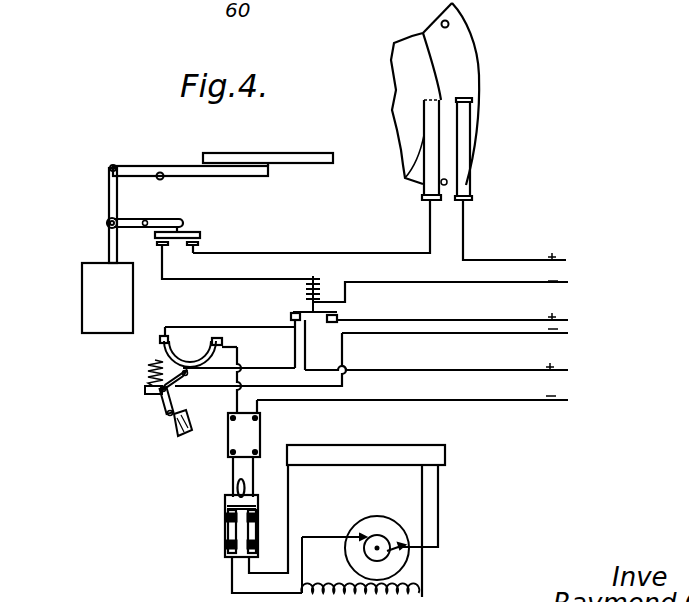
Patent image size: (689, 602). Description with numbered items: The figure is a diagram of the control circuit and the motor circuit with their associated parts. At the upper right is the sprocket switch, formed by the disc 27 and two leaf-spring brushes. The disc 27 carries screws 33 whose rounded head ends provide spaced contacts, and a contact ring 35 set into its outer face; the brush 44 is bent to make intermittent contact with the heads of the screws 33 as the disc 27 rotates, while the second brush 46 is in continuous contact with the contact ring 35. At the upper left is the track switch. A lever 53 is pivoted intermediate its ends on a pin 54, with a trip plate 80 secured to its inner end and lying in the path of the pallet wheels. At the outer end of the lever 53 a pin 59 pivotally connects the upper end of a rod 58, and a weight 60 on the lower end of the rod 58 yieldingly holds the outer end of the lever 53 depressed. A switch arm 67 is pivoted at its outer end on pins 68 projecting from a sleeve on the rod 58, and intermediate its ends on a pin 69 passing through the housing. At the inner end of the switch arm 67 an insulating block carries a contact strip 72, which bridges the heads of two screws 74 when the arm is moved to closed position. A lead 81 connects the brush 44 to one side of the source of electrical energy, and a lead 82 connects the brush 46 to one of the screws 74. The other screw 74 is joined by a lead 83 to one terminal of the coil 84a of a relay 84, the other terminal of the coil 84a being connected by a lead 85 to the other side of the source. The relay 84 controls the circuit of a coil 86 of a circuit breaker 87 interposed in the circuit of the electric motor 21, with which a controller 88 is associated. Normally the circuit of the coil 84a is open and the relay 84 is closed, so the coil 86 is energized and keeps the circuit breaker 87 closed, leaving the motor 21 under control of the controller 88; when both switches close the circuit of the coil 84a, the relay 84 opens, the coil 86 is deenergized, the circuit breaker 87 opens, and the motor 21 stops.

The electric motor 21 is at (384, 522).
The disc 27 is at (463, 60).
The screws 33 is at (449, 25).
The contact ring 35 is at (436, 80).
The brush 44 is at (470, 133).
The second brush 46 is at (431, 116).
The lever 53 is at (185, 166).
The pin 54 is at (166, 178).
The rod 58 is at (105, 192).
The pin 59 is at (108, 169).
The weight 60 is at (90, 302).
The switch arm 67 is at (152, 222).
The pins 68 is at (104, 224).
The pin 69 is at (118, 228).
The contact strip 72 is at (200, 234).
The screws 74 is at (170, 250).
The trip plate 80 is at (297, 153).
The lead 81 is at (463, 222).
The lead 82 is at (252, 253).
The lead 83 is at (240, 279).
The relay 84 is at (306, 294).
The coil 84a is at (320, 278).
The lead 85 is at (444, 285).
The coil 86 is at (148, 366).
The circuit breaker 87 is at (165, 398).
The controller 88 is at (375, 450).